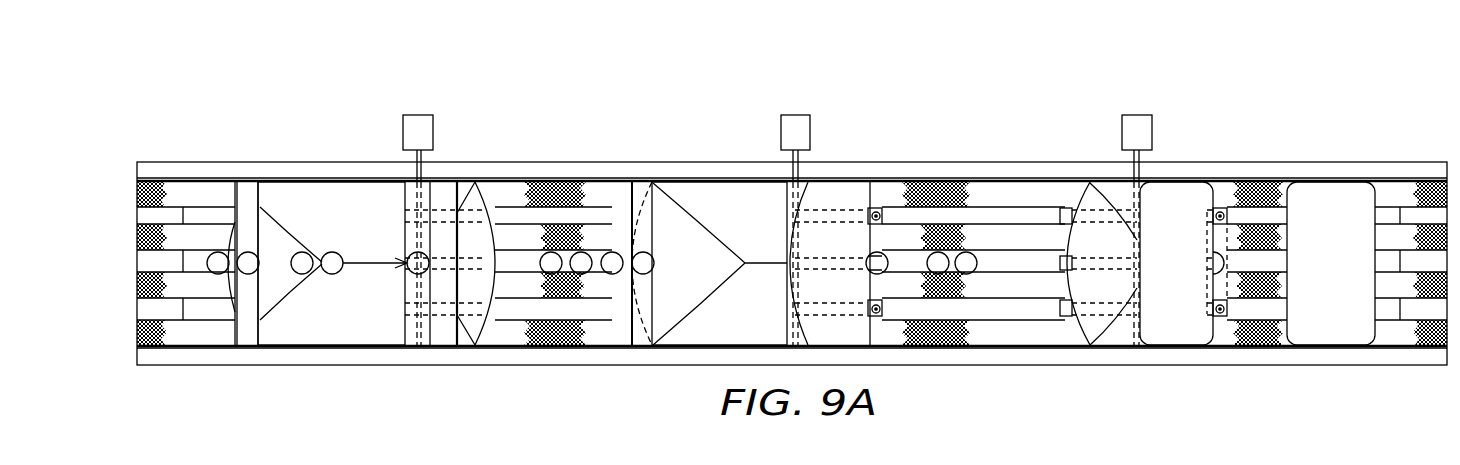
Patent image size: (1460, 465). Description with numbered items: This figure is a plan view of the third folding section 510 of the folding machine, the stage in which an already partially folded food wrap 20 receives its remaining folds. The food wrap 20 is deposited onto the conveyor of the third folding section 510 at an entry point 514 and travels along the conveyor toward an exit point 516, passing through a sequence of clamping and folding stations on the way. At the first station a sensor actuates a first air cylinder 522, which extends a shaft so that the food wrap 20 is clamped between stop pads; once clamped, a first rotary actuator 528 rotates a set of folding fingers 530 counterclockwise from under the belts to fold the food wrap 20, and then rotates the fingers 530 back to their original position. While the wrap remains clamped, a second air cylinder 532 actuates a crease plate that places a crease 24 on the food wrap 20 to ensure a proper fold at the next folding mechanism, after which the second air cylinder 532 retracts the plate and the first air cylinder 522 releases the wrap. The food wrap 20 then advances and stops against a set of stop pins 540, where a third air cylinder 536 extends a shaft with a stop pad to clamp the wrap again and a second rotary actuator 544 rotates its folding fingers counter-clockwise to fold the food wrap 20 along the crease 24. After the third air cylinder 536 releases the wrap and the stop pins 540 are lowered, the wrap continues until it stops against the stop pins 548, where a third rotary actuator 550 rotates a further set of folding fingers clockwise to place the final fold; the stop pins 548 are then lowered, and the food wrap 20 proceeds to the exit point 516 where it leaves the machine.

The food wrap 20 is at (326, 324).
The crease 24 is at (792, 209).
The third folding section 510 is at (906, 93).
The entry point 514 is at (127, 383).
The exit point 516 is at (1453, 383).
The first air cylinder 522 is at (231, 323).
The first rotary actuator 528 is at (418, 115).
The folding fingers 530 is at (484, 194).
The second air cylinder 532 is at (332, 323).
The third air cylinder 536 is at (574, 323).
The stop pins 540 is at (878, 207).
The second rotary actuator 544 is at (800, 115).
The stop pins 548 is at (1222, 207).
The third rotary actuator 550 is at (1140, 115).